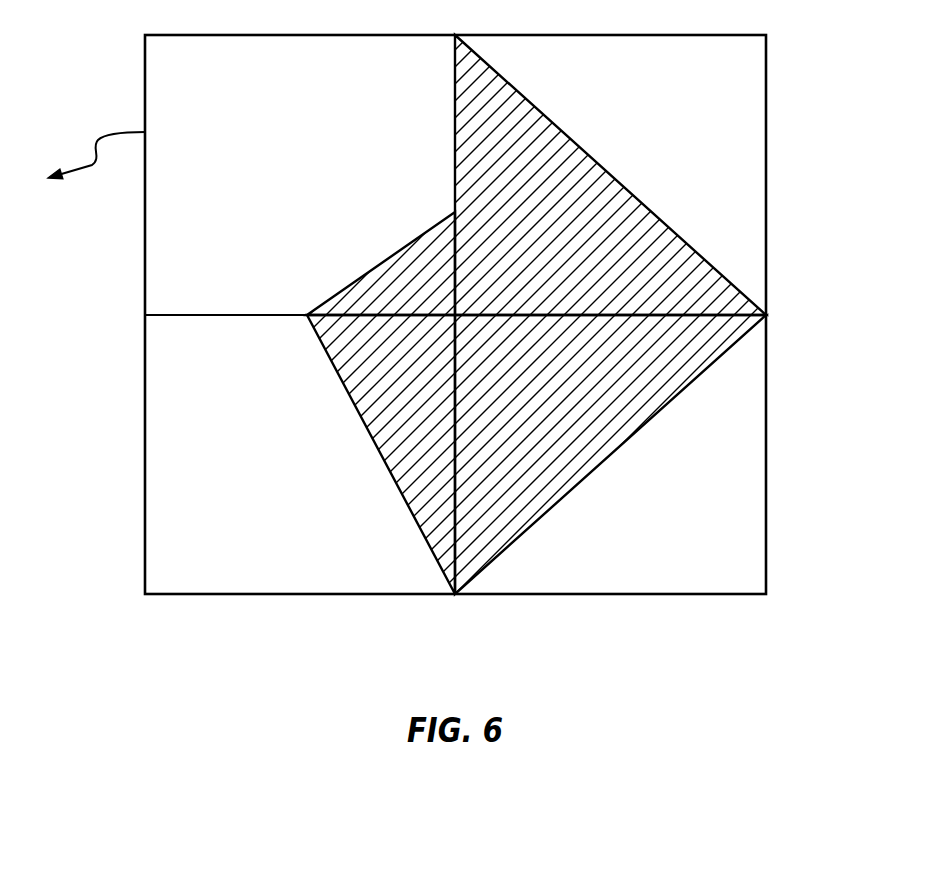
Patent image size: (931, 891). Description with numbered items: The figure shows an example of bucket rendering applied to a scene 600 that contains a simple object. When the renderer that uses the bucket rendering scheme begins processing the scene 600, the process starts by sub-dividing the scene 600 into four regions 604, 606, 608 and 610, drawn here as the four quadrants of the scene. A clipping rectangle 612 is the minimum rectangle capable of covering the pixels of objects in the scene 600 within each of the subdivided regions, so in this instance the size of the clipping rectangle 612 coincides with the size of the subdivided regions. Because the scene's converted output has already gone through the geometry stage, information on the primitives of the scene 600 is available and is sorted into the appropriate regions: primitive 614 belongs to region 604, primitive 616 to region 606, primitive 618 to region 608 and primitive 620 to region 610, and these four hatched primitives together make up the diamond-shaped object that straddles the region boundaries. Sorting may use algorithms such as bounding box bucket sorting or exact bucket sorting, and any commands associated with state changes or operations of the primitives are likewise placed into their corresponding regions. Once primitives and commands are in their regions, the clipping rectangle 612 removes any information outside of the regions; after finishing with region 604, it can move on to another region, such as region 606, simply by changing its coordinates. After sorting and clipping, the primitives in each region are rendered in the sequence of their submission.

The scene 600 is at (766, 160).
The region 604 is at (273, 83).
The region 606 is at (247, 558).
The region 608 is at (676, 558).
The region 610 is at (676, 83).
The clipping rectangle 612 is at (88, 166).
The primitive 614 is at (401, 292).
The primitive 616 is at (401, 352).
The primitive 618 is at (479, 352).
The primitive 620 is at (479, 292).